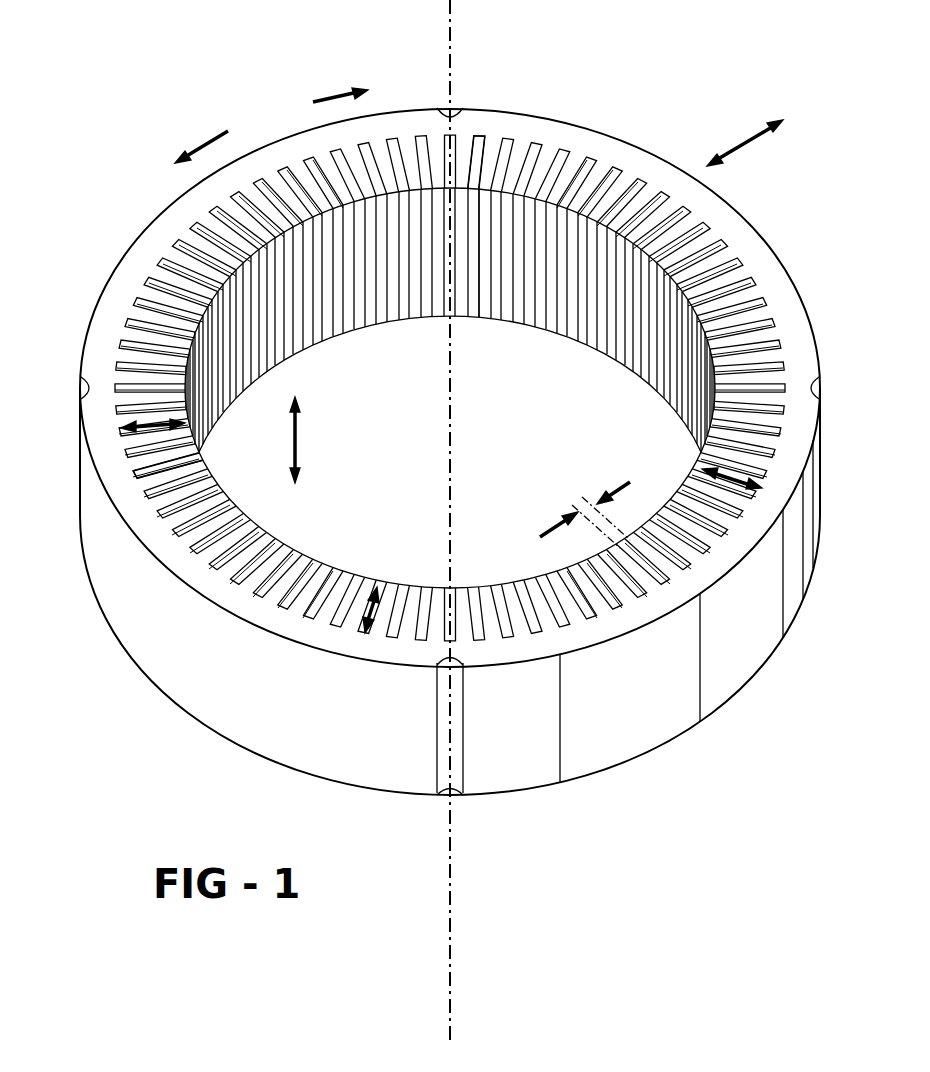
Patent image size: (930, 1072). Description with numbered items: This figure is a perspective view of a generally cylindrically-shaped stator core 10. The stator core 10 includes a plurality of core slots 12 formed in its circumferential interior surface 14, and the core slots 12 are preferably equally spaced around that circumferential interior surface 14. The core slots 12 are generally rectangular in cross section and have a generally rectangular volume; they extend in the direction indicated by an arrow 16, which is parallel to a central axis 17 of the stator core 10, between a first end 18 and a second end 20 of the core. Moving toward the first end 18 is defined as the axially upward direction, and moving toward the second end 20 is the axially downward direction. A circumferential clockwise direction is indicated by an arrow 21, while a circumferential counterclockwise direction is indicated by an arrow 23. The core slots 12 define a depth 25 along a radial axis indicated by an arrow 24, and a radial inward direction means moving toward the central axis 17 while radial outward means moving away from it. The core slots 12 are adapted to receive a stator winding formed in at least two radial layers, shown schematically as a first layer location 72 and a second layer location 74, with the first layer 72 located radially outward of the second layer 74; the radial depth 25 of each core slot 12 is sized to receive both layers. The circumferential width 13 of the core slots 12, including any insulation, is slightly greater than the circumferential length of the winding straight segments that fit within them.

The stator core 10 is at (439, 520).
The core slots 12 is at (142, 276).
The circumferential width 13 is at (603, 487).
The circumferential interior surface 14 is at (141, 466).
The arrow 16 is at (297, 425).
The central axis 17 is at (453, 478).
The first end 18 is at (648, 170).
The second end 20 is at (694, 727).
The arrow 21 is at (345, 95).
The arrow 23 is at (215, 140).
The arrow 24 is at (752, 126).
The depth 25 is at (152, 422).
The first layer location 72 is at (482, 134).
The second layer location 74 is at (480, 160).